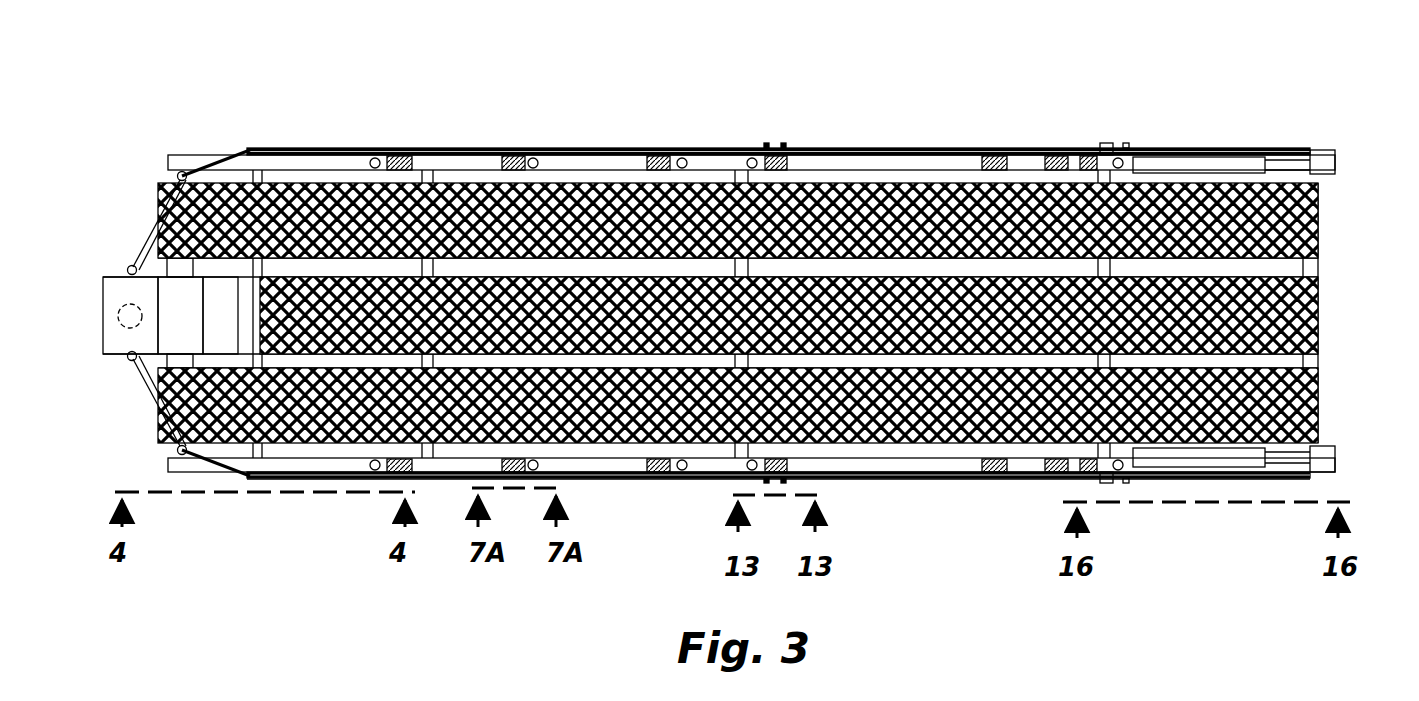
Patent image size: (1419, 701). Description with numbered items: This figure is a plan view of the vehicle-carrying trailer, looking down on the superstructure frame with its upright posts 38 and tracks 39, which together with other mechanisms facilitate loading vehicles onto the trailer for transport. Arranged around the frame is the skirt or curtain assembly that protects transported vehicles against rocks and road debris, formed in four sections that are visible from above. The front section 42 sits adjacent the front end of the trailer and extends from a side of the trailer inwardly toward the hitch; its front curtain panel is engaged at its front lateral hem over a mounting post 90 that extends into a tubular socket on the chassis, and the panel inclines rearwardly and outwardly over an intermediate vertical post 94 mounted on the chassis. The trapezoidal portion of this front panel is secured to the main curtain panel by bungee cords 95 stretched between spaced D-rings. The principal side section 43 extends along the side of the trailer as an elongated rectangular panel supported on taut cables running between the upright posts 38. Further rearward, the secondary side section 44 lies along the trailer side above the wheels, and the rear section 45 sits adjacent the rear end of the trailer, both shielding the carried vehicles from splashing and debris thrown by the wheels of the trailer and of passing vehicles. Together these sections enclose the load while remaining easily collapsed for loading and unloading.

The upright posts 38 is at (997, 148).
The tracks 39 is at (1283, 218).
The front section 42 is at (149, 238).
The principal side section 43 is at (445, 480).
The secondary side section 44 is at (917, 478).
The rear section 45 is at (1168, 150).
The mounting post 90 is at (131, 265).
The intermediate vertical post 94 is at (181, 171).
The bungee cords 95 is at (320, 149).